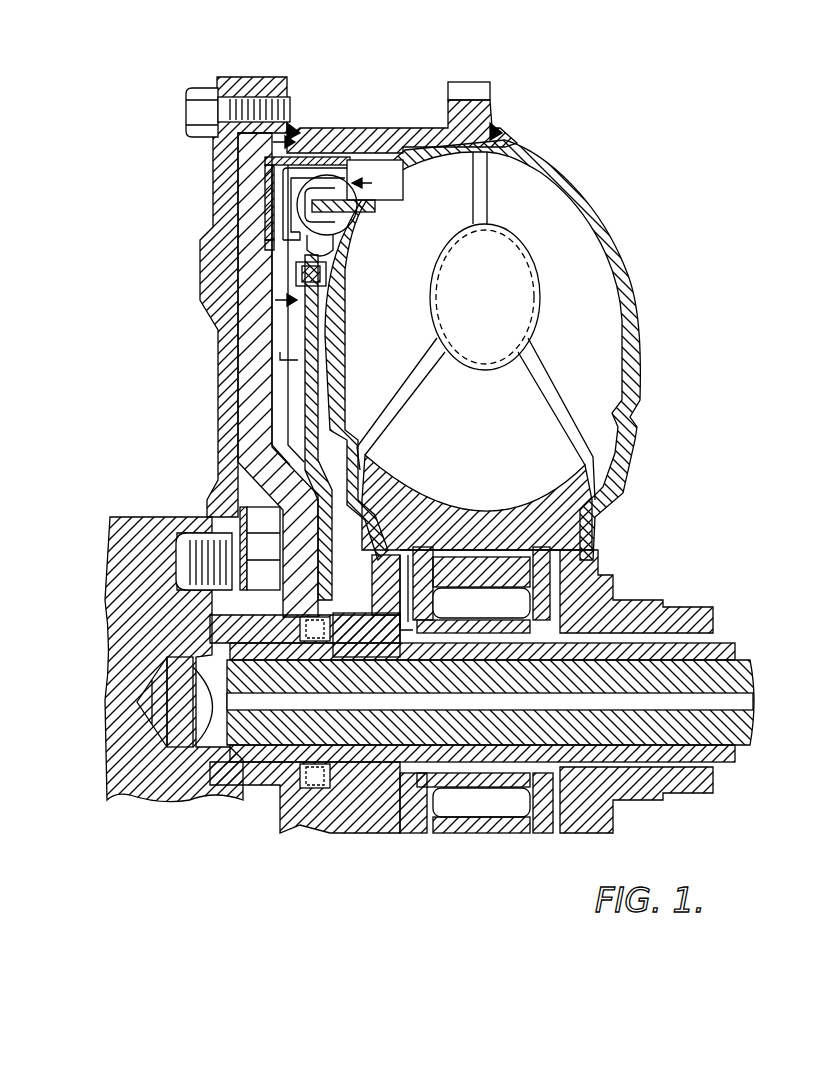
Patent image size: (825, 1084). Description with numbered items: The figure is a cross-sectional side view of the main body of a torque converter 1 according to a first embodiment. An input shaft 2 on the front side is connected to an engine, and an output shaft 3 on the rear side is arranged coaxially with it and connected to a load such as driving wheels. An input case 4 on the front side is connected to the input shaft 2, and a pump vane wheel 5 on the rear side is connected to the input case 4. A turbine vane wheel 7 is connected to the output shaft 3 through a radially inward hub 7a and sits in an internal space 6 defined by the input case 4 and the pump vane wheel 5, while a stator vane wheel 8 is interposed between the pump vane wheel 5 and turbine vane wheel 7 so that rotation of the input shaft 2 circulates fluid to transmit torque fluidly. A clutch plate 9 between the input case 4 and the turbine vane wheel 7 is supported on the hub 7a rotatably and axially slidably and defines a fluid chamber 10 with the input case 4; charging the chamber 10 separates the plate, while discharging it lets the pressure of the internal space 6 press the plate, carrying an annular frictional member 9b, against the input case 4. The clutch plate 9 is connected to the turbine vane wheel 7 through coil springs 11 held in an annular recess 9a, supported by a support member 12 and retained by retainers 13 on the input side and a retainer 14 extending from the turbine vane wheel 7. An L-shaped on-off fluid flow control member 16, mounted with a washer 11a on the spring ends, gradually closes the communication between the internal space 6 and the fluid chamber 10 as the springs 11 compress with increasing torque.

The main body of torque converter 1 is at (562, 150).
The input shaft 2 is at (133, 538).
The output shaft 3 is at (747, 732).
The input case 4 is at (257, 385).
The pump vane wheel 5 is at (603, 283).
The internal space 6 is at (397, 130).
The turbine vane wheel 7 is at (408, 288).
The hub 7a is at (378, 840).
The stator vane wheel 8 is at (488, 370).
The clutch plate 9 is at (243, 360).
The annular recess 9a is at (322, 160).
The annular frictional member 9b is at (265, 186).
The fluid chamber 10 is at (282, 412).
The coil springs 11 is at (355, 168).
The washer 11a is at (376, 205).
The support member 12 is at (335, 258).
The retainers 13 is at (337, 170).
The retainer 14 is at (358, 230).
The on-off fluid flow control member 16 is at (266, 212).